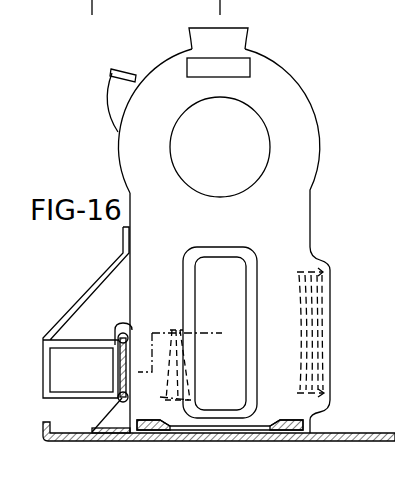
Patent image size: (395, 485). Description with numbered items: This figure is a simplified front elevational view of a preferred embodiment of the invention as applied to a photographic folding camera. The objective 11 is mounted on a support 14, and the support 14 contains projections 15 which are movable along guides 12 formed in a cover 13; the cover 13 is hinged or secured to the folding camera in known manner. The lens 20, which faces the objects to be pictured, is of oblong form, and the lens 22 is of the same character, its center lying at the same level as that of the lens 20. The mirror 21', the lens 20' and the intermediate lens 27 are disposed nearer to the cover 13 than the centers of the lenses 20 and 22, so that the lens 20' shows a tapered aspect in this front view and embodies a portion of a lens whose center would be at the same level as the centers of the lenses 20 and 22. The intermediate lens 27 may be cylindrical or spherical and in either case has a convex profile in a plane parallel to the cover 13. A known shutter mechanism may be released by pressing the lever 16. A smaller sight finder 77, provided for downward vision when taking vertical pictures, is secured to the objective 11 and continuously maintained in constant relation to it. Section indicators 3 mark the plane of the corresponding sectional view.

The section line 3- 3 is at (83, 373).
The objective 11 is at (248, 132).
The guides 12 is at (165, 432).
The cover 13 is at (367, 434).
The support 14 is at (292, 212).
The projections 15 is at (140, 434).
The lever 16 is at (123, 92).
The lens 20 is at (220, 320).
The lens 20' is at (180, 370).
The mirror 21' is at (86, 325).
The lens 22 is at (315, 286).
The intermediate lens 27 is at (126, 348).
The sight finder 77 is at (226, 65).